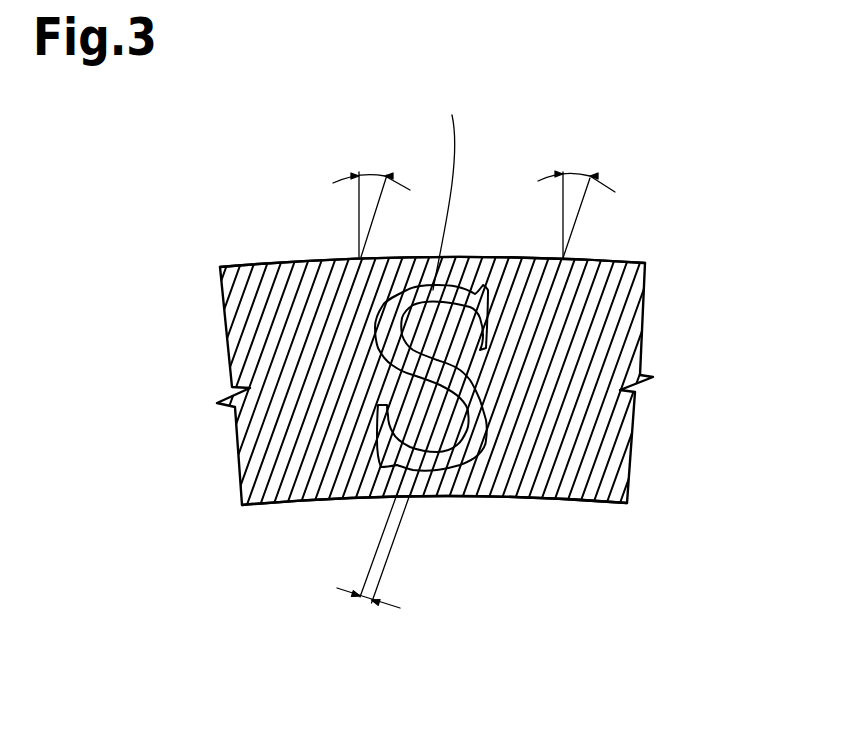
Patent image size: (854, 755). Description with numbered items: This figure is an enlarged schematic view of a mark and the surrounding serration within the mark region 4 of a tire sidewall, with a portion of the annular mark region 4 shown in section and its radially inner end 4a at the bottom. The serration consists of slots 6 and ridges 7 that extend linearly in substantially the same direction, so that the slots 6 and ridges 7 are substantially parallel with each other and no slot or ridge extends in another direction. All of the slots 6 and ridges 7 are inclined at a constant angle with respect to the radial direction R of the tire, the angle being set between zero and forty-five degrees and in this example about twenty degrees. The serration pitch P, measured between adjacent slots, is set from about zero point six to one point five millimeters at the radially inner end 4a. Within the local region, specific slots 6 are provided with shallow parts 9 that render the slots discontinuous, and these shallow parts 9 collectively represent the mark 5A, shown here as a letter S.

The mark region 4 is at (642, 302).
The radially inner end 4a is at (503, 498).
The mark 5A is at (465, 272).
The serration slots 6 is at (325, 355).
The ridges 7 is at (292, 297).
The shallow parts 9 is at (447, 184).
The radial direction R is at (360, 208).
The serration pitch P is at (362, 605).